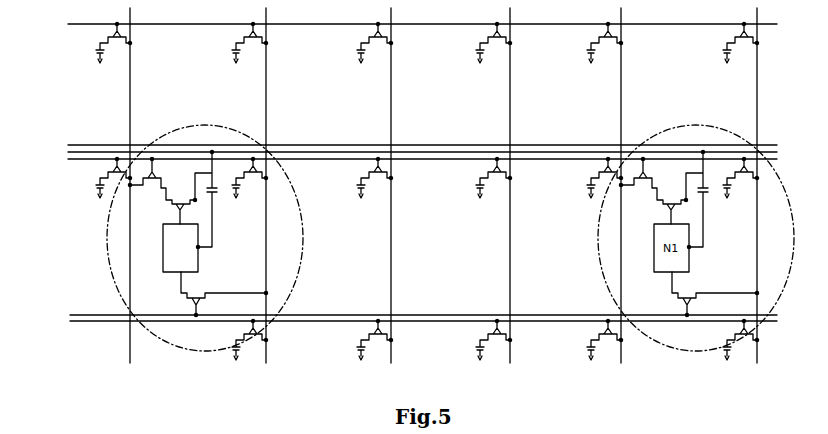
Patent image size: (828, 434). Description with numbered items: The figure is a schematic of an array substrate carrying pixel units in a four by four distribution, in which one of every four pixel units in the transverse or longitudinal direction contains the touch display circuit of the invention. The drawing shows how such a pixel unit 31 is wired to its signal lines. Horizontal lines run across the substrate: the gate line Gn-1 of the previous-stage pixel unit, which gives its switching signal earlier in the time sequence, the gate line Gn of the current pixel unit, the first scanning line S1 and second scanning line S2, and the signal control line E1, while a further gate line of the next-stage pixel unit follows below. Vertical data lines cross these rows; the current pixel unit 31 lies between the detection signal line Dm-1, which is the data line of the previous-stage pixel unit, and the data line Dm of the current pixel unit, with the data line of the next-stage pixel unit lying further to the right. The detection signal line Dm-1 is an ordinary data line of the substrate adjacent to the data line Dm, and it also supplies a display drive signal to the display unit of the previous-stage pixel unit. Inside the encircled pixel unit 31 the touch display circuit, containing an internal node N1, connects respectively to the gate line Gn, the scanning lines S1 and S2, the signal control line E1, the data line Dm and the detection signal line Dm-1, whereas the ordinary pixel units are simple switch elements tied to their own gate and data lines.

The gate line of the previous-stage pixel unit Gn-1 is at (83, 25).
The gate line Gn is at (80, 160).
The first scanning line S1 is at (109, 151).
The second scanning line S2 is at (72, 145).
The signal control line E1 is at (112, 314).
The detection signal line Dm-1 is at (131, 77).
The data line Dm is at (267, 78).
The first node N1 is at (180, 248).
The pixel unit 31 is at (205, 253).